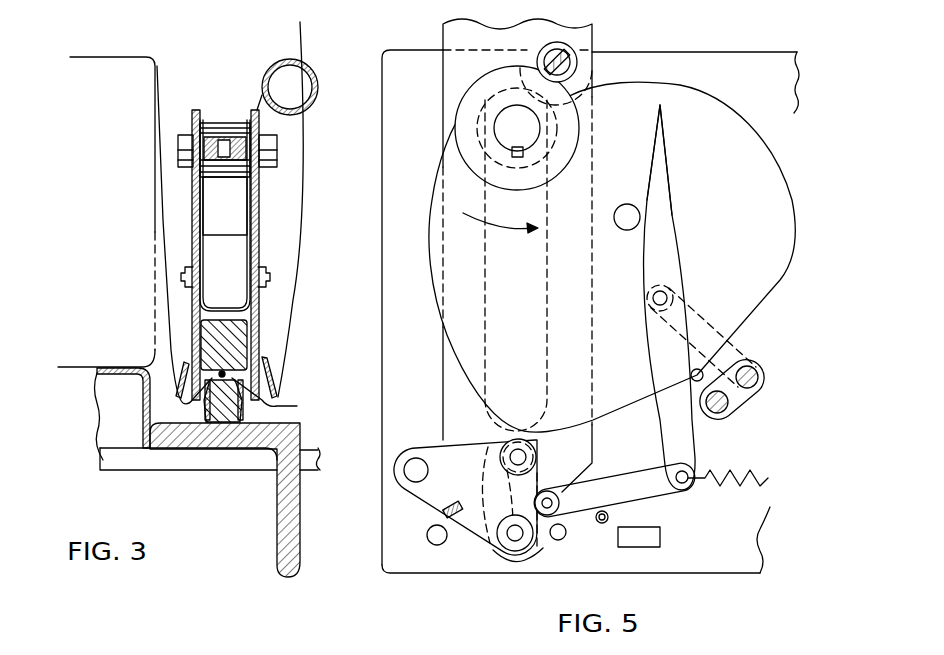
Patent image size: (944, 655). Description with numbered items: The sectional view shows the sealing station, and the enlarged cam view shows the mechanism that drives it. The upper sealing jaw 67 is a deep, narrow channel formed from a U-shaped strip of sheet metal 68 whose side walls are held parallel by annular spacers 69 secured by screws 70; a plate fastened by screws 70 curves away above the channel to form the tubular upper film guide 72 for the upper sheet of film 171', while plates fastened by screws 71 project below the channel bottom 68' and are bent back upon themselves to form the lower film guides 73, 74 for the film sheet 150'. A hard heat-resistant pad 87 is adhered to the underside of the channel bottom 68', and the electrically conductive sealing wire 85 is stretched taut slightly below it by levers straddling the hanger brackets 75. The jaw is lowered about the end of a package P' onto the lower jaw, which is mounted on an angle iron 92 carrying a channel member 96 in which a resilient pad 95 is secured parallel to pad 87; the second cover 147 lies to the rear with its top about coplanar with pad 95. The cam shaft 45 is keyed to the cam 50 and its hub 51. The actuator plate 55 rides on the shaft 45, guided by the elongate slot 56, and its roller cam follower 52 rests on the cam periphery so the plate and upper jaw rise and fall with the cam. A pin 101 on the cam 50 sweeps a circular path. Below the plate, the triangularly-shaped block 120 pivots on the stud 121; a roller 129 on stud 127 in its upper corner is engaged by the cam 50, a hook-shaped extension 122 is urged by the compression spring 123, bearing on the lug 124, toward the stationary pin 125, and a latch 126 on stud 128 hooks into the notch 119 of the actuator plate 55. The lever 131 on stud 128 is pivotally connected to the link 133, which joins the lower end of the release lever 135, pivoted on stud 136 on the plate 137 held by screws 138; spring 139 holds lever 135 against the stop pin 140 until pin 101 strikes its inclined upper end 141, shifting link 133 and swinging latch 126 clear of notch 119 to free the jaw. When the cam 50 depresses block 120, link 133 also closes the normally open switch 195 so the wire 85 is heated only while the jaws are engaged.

In FIG. 3, the panel P' is at (106, 196).
In FIG. 3, the upper sheet of film 171' is at (195, 209).
In FIG. 3, the film sheet 150' is at (248, 236).
In FIG. 3, the upper tubular film guide 72 is at (273, 58).
In FIG. 3, the upper sealing jaw 67 is at (192, 110).
In FIG. 3, the U-shaped strip of sheet metal 68 is at (268, 255).
In FIG. 3, the channel bottom 68' is at (243, 222).
In FIG. 3, the annular spacers 69 is at (217, 123).
In FIG. 3, the screws 70 is at (184, 163).
In FIG. 3, the hanger bracket 75 is at (222, 233).
In FIG. 3, the screws 71 is at (182, 270).
In FIG. 3, the heat-resistant pad 87 is at (240, 340).
In FIG. 3, the lower film guide 74 is at (185, 364).
In FIG. 3, the lower film guide 73 is at (270, 366).
In FIG. 3, the sealing wire 85 is at (206, 406).
In FIG. 3, the channel member 96 is at (241, 406).
In FIG. 3, the second cover 147 is at (98, 373).
In FIG. 3, the angle iron 92 is at (277, 508).
In FIG. 3, the resilient pad 95 is at (220, 423).
In FIG. 5, the cam 50 is at (725, 106).
In FIG. 5, the cam hub 51 is at (478, 160).
In FIG. 5, the actuator plate 55 is at (593, 50).
In FIG. 5, the elongate slot 56 is at (530, 318).
In FIG. 5, the cam shaft 45 is at (502, 123).
In FIG. 5, the roller cam follower 52 is at (580, 68).
In FIG. 5, the pin 101 is at (625, 230).
In FIG. 5, the release lever 135 is at (677, 257).
In FIG. 5, the inclined upper end 141 is at (650, 140).
In FIG. 5, the stud 136 is at (652, 297).
In FIG. 5, the plate 137 is at (703, 306).
In FIG. 5, the stop pin 140 is at (698, 368).
In FIG. 5, the screws 138 is at (728, 404).
In FIG. 5, the link 133 is at (657, 497).
In FIG. 5, the lever 131 is at (580, 483).
In FIG. 5, the spring 139 is at (746, 477).
In FIG. 5, the triangularly-shaped block 120 is at (425, 444).
In FIG. 5, the stud 121 is at (408, 458).
In FIG. 5, the roller 129 is at (537, 448).
In FIG. 5, the stud 127 is at (512, 453).
In FIG. 5, the latch 126 is at (478, 481).
In FIG. 5, the notch 119 is at (538, 472).
In FIG. 5, the stud 128 is at (508, 541).
In FIG. 5, the hook-shaped extension 122 is at (530, 558).
In FIG. 5, the stationary pin 125 is at (563, 540).
In FIG. 5, the lug 124 is at (428, 541).
In FIG. 5, the compression spring 123 is at (442, 511).
In FIG. 5, the normally open switch 195 is at (661, 542).